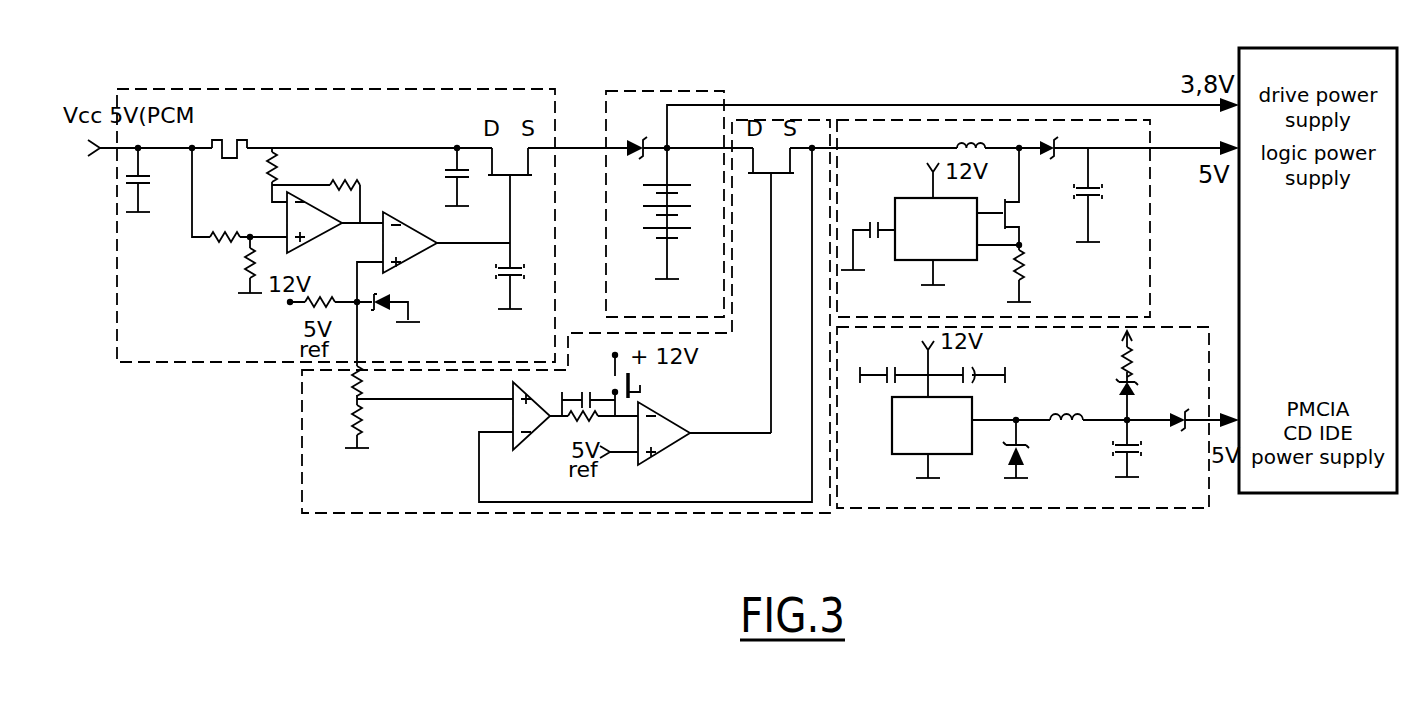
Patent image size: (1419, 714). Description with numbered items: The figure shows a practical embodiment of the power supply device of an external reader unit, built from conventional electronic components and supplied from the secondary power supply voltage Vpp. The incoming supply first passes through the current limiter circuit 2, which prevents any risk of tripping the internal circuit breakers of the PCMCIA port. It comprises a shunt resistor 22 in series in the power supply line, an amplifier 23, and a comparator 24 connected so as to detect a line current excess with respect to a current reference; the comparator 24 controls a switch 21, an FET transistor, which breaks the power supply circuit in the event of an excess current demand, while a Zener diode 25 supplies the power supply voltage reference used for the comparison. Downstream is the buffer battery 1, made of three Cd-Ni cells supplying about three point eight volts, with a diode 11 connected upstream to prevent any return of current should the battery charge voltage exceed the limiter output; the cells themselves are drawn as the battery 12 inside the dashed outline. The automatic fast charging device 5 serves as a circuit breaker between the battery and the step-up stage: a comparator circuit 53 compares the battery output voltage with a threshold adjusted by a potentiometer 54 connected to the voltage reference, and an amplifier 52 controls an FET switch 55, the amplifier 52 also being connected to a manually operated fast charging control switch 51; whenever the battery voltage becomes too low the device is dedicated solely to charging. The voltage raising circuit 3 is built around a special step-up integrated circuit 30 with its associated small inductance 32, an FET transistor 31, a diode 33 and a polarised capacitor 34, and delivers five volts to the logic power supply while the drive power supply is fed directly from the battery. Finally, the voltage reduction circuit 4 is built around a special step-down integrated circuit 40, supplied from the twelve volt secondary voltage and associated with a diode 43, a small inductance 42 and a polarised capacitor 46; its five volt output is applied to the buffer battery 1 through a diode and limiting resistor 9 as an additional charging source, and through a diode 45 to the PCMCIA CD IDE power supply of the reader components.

The buffer battery 1 is at (678, 87).
The current limiter circuit 2 is at (389, 87).
The voltage raising circuit 3 is at (1084, 120).
The voltage reduction circuit 4 is at (1031, 514).
The automatic fast charging device 5 is at (506, 516).
The limiting resistor 9 is at (1145, 348).
The diode 11 is at (637, 140).
The battery 12 is at (645, 217).
The switch 21 is at (513, 181).
The shunt resistor 22 is at (233, 131).
The amplifier 23 is at (313, 223).
The comparator 24 is at (437, 252).
The Zener diode 25 is at (383, 305).
The integrated circuit 30 is at (910, 261).
The MOSFET 31 is at (1020, 216).
The inductance 32 is at (978, 145).
The diode 33 is at (1052, 161).
The polarised capacitor 34 is at (1095, 201).
The integrated circuit 40 is at (888, 433).
The inductance 42 is at (1068, 413).
The diode 43 is at (1028, 449).
The diode 45 is at (1180, 433).
The polarised capacitor 46 is at (1135, 460).
The fast charging control switch 51 is at (645, 385).
The amplifier 52 is at (666, 447).
The comparator circuit 53 is at (529, 441).
The potentiometer 54 is at (370, 414).
The switch 55 is at (778, 180).